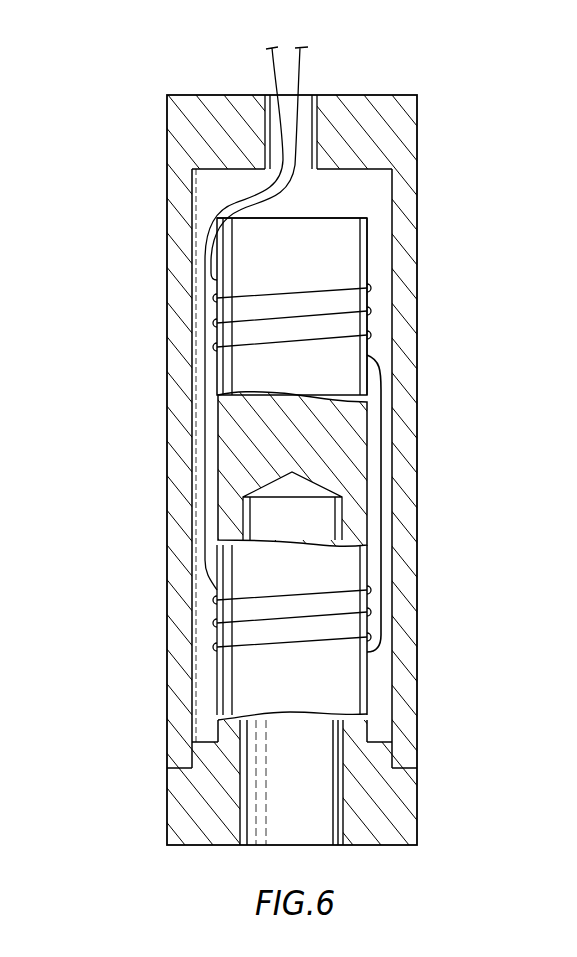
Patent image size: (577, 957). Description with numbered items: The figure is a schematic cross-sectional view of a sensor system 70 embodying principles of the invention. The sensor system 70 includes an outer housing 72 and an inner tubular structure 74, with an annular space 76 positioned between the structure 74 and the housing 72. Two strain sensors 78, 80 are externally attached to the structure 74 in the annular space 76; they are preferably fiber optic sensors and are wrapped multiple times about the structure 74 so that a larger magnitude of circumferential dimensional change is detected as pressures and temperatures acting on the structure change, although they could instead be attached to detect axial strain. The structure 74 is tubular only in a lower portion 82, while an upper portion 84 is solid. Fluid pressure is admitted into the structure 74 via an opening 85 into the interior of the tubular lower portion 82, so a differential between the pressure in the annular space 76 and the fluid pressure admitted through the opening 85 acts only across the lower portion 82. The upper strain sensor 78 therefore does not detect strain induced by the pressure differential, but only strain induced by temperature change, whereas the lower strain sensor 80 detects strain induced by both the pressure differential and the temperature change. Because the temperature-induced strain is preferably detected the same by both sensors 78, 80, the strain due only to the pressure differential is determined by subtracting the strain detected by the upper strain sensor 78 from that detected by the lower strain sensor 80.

The sensor system 70 is at (482, 127).
The outer housing 72 is at (418, 463).
The inner tubular structure 74 is at (217, 443).
The annular space 76 is at (380, 235).
The upper strain sensor 78 is at (373, 312).
The lower strain sensor 80 is at (218, 623).
The lower portion 82 is at (370, 563).
The upper portion 84 is at (368, 257).
The opening 85 is at (287, 828).